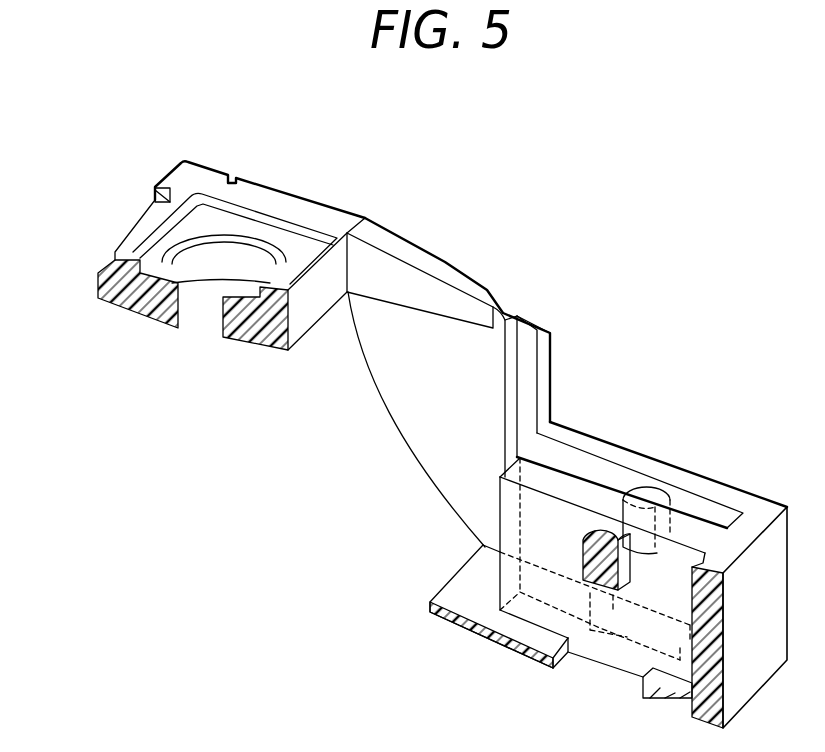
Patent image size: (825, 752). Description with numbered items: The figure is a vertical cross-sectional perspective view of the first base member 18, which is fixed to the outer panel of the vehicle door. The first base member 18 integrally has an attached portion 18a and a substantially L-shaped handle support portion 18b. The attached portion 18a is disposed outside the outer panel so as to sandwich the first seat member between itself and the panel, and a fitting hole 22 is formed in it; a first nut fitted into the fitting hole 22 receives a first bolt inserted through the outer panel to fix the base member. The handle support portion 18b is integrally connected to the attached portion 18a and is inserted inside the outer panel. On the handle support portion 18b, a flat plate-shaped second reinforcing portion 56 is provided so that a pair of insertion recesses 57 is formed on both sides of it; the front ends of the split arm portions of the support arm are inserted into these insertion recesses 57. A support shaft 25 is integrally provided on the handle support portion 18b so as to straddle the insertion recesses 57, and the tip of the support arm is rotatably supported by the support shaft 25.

The first base member 18 is at (540, 322).
The attached portion 18a is at (265, 200).
The handle support portion 18b is at (743, 490).
The fitting hole 22 is at (188, 268).
The support shaft 25 is at (602, 592).
The second reinforcing portion 56 is at (507, 516).
The insertion recesses 57 is at (590, 472).